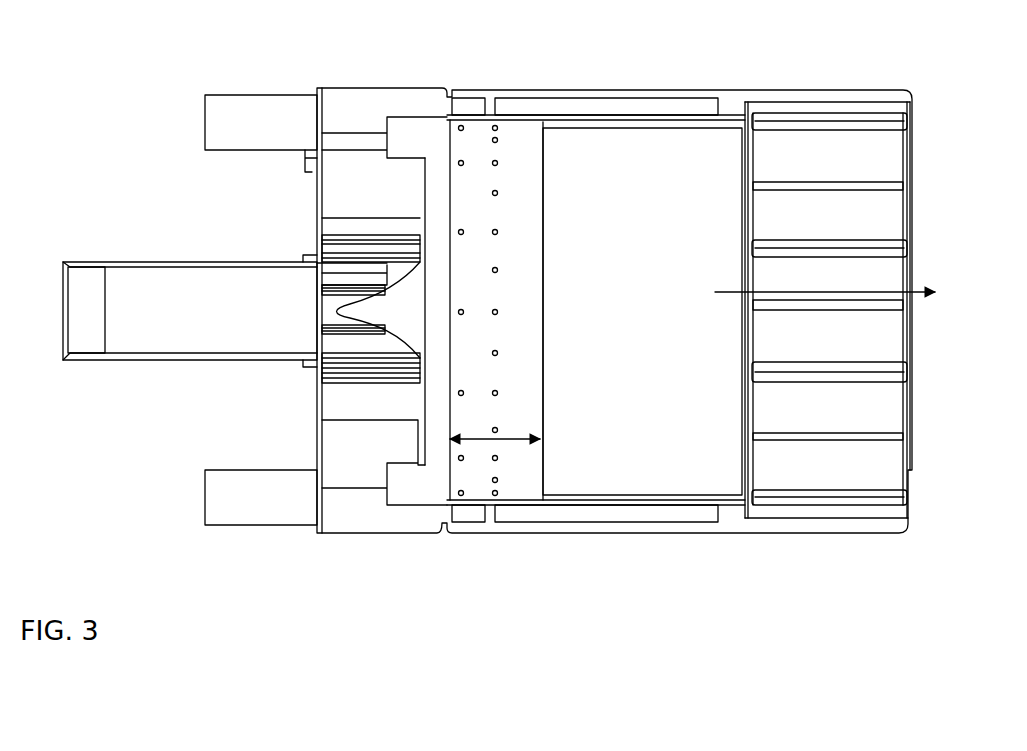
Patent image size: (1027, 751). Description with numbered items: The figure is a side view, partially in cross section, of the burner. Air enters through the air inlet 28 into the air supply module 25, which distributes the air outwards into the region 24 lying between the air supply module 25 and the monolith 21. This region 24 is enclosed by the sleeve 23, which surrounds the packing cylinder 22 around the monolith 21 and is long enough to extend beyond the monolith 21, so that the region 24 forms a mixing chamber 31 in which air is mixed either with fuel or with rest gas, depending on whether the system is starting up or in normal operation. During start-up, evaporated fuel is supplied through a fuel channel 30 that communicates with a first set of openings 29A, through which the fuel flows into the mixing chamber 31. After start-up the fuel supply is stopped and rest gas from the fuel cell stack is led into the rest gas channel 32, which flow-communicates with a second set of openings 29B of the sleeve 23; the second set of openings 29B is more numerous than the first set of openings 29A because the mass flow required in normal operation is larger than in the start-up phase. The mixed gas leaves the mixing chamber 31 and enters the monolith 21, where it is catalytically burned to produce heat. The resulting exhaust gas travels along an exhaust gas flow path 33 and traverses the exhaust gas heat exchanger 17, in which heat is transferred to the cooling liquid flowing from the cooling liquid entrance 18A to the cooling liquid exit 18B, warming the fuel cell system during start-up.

The exhaust gas heat exchanger 17 is at (818, 143).
The cooling liquid entrance 18A is at (205, 122).
The cooling liquid exit 18B is at (205, 497).
The monolith 21 is at (641, 312).
The packing cylinder 22 is at (727, 123).
The sleeve 23 is at (527, 143).
The region 24 is at (508, 442).
The air supply module 25 is at (407, 90).
The air inlet 28 is at (162, 292).
The first set of openings 29A is at (461, 312).
The second set of openings 29B is at (495, 270).
The fuel channel 30 is at (470, 110).
The mixing chamber 31 is at (447, 420).
The rest gas channel 32 is at (658, 108).
The exhaust gas flow path 33 is at (720, 296).